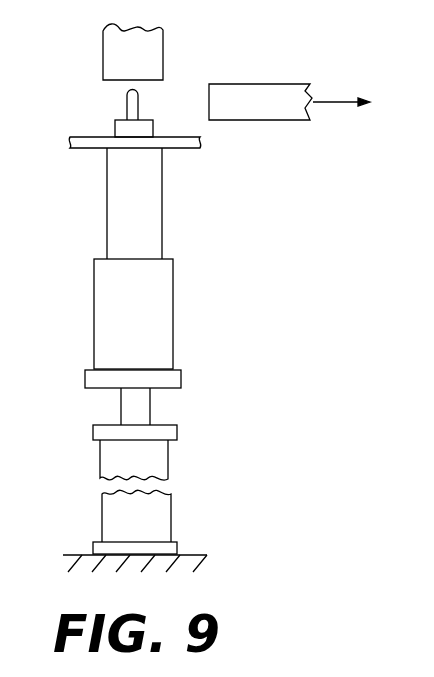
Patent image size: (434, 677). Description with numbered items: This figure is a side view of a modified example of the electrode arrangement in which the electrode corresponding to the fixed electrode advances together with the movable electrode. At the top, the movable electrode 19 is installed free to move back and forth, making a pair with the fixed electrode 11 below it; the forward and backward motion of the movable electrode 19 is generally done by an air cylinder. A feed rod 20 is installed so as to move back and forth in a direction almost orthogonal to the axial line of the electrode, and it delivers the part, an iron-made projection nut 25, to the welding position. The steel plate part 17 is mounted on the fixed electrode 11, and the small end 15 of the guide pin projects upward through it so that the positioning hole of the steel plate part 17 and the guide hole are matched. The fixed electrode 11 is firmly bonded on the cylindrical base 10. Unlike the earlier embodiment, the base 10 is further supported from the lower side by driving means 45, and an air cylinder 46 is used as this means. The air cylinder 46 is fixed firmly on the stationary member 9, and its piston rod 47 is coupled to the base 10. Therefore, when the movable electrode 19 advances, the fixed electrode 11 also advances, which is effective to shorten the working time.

The stationary member 9 is at (190, 555).
The cylindrical base 10 is at (173, 322).
The fixed electrode 11 is at (162, 236).
The small end 15 is at (127, 107).
The steel plate part 17 is at (178, 149).
The movable electrode 19 is at (163, 43).
The feed rod 20 is at (257, 84).
The projection nut 25 is at (147, 120).
The driving means 45 is at (179, 465).
The air cylinder 46 is at (101, 513).
The piston rod 47 is at (121, 410).